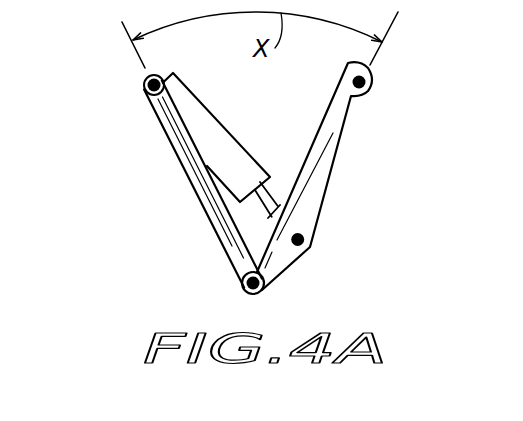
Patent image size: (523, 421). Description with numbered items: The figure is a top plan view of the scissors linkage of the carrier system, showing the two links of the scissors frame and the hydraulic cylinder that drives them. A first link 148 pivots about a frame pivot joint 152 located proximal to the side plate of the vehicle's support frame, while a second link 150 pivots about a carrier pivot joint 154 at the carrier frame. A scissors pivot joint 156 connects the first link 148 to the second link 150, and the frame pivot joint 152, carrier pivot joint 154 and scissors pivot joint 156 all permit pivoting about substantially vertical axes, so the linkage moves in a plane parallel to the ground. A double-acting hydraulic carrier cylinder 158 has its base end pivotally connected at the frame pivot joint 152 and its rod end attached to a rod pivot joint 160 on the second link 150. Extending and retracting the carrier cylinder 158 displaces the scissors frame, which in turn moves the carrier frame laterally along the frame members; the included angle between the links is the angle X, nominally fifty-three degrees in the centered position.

The first link 148 is at (193, 182).
The second link 150 is at (323, 197).
The frame pivot joint 152 is at (145, 86).
The carrier pivot joint 154 is at (366, 82).
The scissors pivot joint 156 is at (242, 288).
The carrier cylinder 158 is at (236, 142).
The rod pivot joint 160 is at (305, 243).